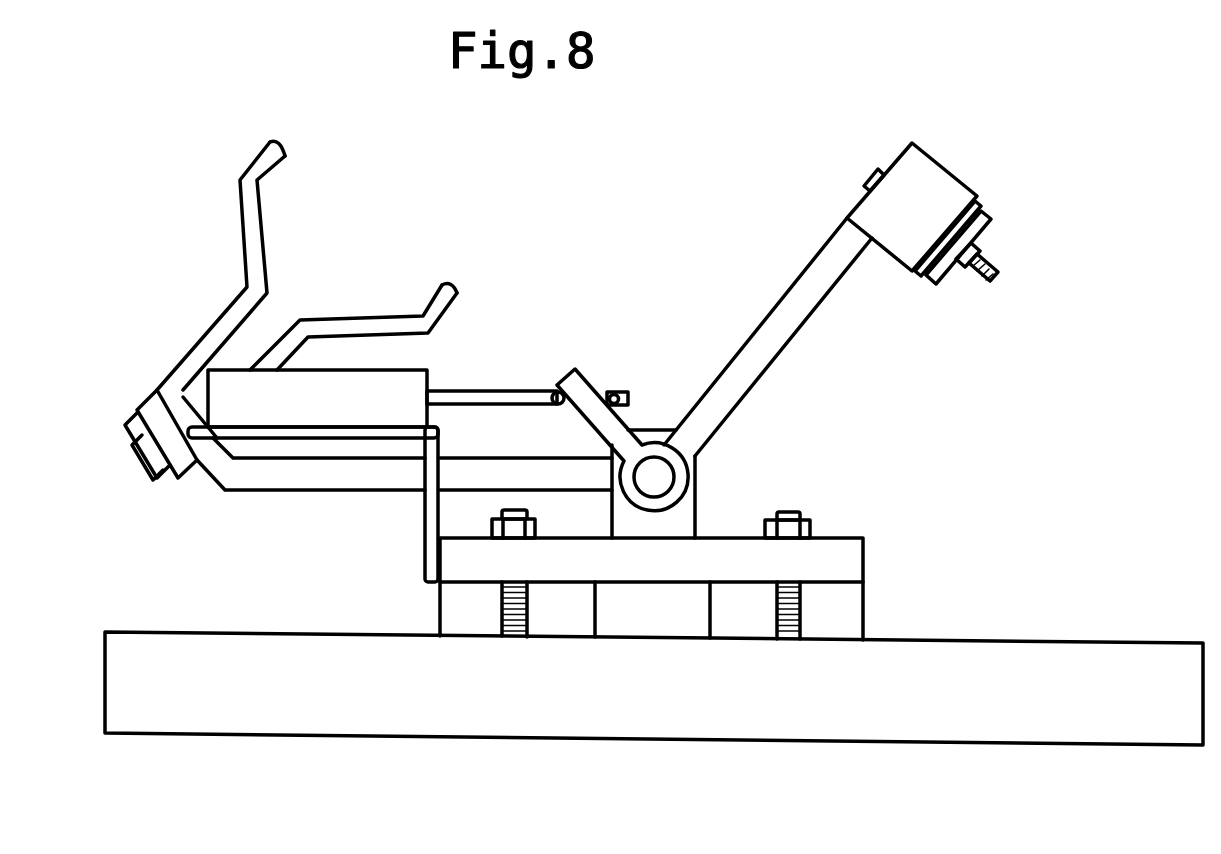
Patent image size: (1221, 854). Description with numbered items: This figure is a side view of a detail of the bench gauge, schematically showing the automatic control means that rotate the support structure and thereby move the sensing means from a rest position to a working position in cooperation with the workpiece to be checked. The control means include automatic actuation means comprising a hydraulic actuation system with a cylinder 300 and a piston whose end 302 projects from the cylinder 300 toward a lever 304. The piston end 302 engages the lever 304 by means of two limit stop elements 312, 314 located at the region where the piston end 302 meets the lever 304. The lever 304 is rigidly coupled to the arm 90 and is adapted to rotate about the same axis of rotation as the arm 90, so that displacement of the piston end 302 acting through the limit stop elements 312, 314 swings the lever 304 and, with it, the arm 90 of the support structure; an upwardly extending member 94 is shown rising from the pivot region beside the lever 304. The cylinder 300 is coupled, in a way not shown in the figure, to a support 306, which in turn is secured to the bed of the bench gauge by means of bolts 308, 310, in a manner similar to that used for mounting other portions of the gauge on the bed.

The arm 90 is at (282, 502).
The support arm 94 is at (712, 478).
The cylinder 300 is at (222, 383).
The piston end 302 is at (473, 391).
The lever 304 is at (612, 425).
The support 306 is at (455, 560).
The bolt 308 is at (537, 523).
The bolt 310 is at (805, 520).
The limit stop element 312 is at (552, 392).
The limit stop element 314 is at (615, 391).